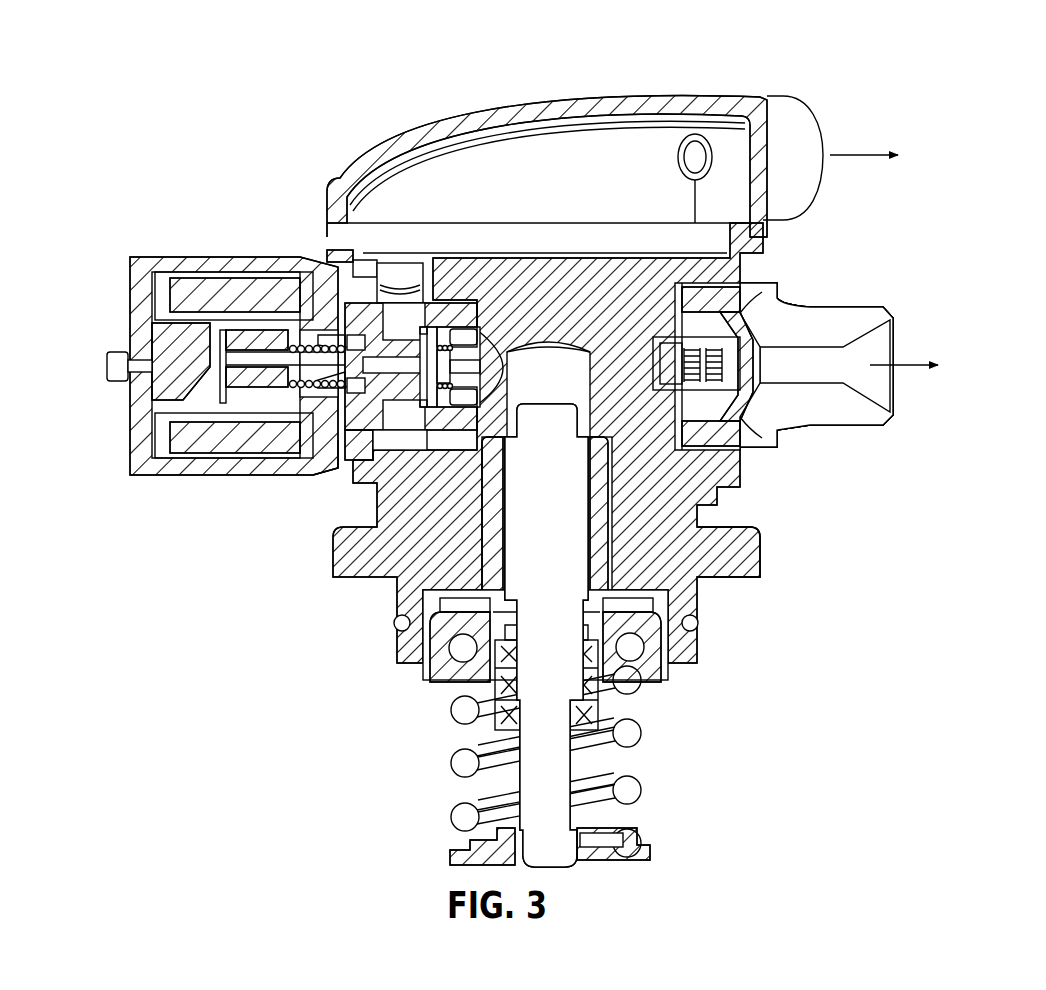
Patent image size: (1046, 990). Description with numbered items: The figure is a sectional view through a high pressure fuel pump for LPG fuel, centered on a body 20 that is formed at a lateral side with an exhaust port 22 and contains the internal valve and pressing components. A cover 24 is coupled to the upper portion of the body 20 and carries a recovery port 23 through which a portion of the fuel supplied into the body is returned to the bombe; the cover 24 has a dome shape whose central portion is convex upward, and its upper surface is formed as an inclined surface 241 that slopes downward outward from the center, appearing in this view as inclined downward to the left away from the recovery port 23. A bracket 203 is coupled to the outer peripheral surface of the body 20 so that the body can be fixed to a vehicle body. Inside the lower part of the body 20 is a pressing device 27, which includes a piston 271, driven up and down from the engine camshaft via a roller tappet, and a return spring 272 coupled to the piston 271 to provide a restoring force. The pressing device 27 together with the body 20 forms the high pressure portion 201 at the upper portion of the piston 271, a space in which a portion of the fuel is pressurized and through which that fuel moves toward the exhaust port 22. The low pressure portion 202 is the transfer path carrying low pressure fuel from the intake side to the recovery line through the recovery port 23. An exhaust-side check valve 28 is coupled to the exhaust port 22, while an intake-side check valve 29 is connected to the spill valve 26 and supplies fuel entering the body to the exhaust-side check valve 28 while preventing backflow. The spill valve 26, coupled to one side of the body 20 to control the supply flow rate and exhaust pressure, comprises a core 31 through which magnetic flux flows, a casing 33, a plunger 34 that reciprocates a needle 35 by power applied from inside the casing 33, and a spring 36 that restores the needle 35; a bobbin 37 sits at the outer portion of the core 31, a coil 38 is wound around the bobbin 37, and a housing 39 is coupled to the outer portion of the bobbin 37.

The body 20 is at (613, 443).
The exhaust port 22 is at (862, 300).
The recovery port 23 is at (815, 118).
The cover 24 is at (533, 105).
The inclined surface 241 is at (480, 135).
The spill valve 26 is at (165, 230).
The pressing device 27 is at (752, 742).
The piston 271 is at (565, 755).
The return spring 272 is at (640, 730).
The exhaust-side check valve 28 is at (740, 326).
The intake-side check valve 29 is at (433, 325).
The core 31 is at (150, 340).
The casing 33 is at (328, 452).
The plunger 34 is at (258, 325).
The needle 35 is at (258, 476).
The spring 36 is at (148, 372).
The bobbin 37 is at (150, 313).
The coil 38 is at (222, 272).
The housing 39 is at (182, 476).
The high pressure portion 201 is at (565, 378).
The low pressure portion 202 is at (397, 283).
The bracket 203 is at (763, 553).